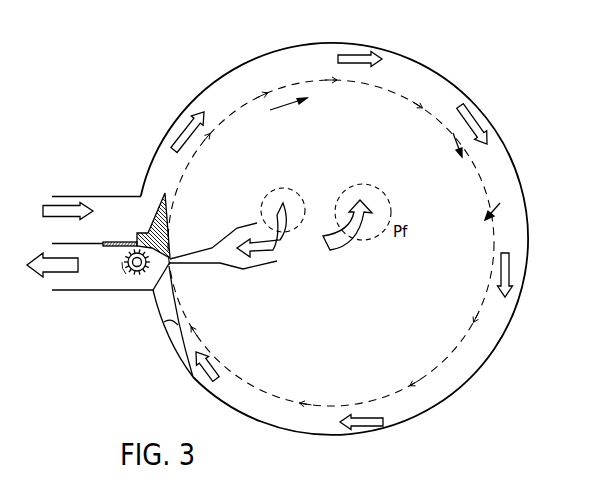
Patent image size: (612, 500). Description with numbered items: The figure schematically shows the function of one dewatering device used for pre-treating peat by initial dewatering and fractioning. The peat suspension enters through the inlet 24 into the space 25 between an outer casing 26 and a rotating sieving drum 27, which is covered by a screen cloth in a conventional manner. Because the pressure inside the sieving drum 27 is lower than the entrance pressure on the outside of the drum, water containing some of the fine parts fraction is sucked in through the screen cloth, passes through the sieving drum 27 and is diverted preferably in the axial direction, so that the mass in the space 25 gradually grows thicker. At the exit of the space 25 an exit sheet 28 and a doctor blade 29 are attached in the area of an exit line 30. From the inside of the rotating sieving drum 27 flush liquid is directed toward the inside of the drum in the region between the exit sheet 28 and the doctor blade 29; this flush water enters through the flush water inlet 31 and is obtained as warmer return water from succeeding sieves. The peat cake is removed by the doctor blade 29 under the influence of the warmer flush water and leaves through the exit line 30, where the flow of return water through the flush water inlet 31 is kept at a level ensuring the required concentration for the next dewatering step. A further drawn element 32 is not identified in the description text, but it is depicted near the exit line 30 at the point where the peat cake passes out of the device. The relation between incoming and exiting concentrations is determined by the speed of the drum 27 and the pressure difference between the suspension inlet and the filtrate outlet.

The inlet 24 is at (99, 204).
The space 25 is at (248, 73).
The outer casing 26 is at (310, 43).
The rotating sieving drum 27 is at (393, 91).
The exit sheet 28 is at (166, 323).
The doctor blade 29 is at (167, 220).
The exit line 30 is at (97, 290).
The flush water inlet 31 is at (208, 266).
The rotary valve 32 is at (133, 277).